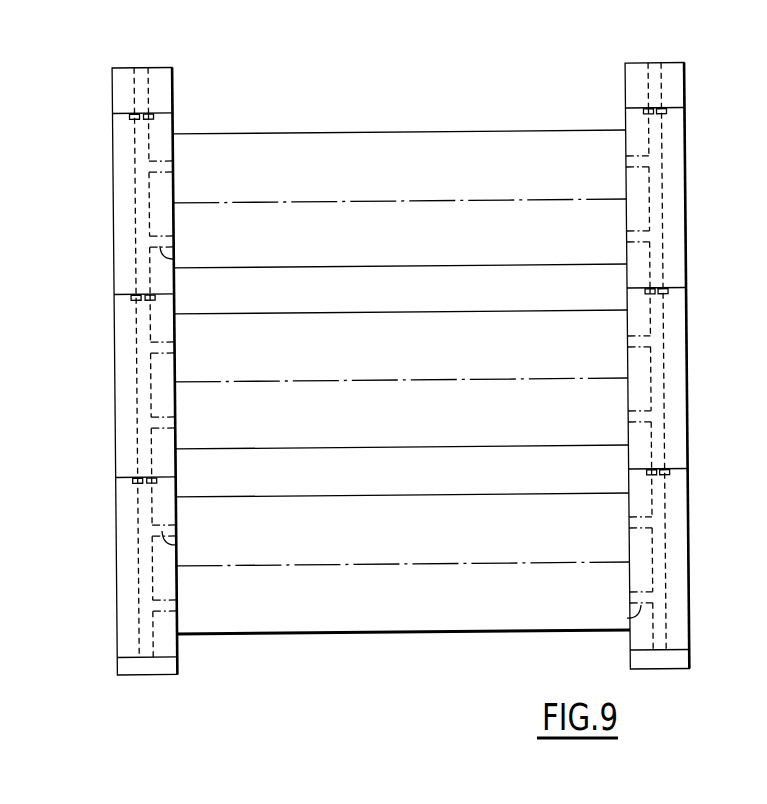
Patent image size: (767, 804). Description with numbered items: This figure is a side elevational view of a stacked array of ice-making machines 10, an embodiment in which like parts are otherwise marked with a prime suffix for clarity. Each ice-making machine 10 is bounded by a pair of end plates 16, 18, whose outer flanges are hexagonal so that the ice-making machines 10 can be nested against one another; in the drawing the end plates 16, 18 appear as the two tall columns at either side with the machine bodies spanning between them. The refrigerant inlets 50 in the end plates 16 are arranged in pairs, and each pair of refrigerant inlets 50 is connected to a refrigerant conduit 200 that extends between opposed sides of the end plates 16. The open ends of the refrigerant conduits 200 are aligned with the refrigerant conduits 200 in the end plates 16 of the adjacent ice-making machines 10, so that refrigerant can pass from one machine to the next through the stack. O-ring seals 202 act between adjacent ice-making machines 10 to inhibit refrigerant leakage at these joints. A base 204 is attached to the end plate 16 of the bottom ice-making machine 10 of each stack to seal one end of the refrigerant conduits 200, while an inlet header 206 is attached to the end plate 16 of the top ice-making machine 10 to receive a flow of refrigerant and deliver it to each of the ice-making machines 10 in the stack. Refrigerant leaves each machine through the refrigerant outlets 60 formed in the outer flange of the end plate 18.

The ice-making machine 10 is at (397, 131).
The end plate 16 is at (677, 140).
The end plate 18 is at (124, 185).
The refrigerant inlet 50 is at (625, 620).
The refrigerant outlet 60 is at (176, 256).
The refrigerant conduit 200 is at (147, 381).
The O-ring seal 202 is at (667, 476).
The base 204 is at (166, 664).
The inlet header 206 is at (163, 80).